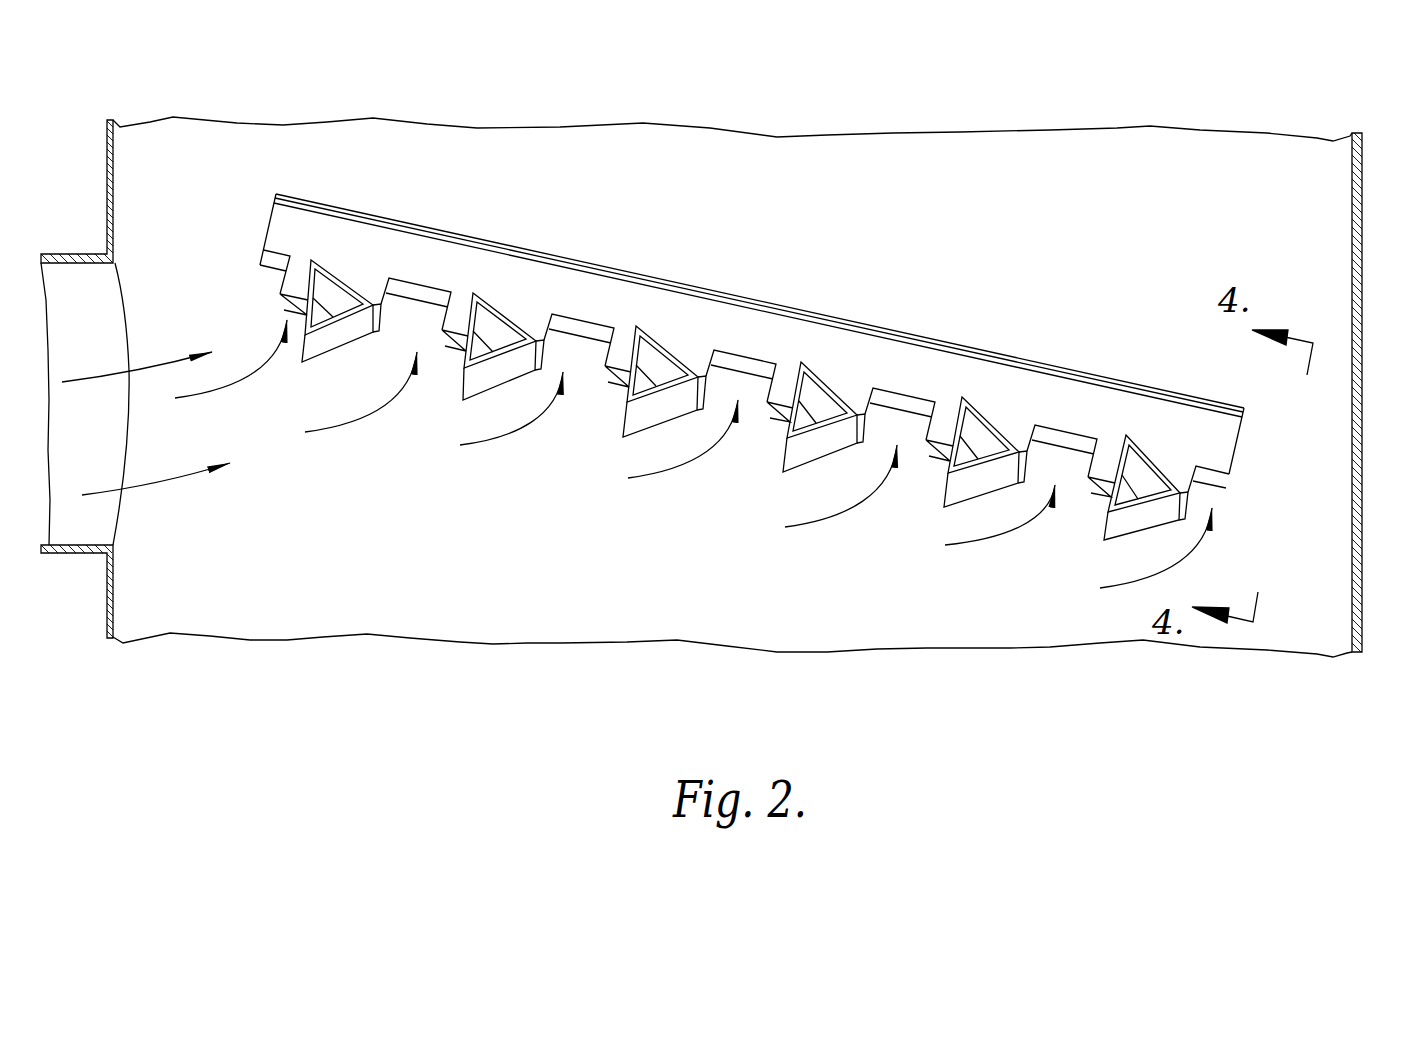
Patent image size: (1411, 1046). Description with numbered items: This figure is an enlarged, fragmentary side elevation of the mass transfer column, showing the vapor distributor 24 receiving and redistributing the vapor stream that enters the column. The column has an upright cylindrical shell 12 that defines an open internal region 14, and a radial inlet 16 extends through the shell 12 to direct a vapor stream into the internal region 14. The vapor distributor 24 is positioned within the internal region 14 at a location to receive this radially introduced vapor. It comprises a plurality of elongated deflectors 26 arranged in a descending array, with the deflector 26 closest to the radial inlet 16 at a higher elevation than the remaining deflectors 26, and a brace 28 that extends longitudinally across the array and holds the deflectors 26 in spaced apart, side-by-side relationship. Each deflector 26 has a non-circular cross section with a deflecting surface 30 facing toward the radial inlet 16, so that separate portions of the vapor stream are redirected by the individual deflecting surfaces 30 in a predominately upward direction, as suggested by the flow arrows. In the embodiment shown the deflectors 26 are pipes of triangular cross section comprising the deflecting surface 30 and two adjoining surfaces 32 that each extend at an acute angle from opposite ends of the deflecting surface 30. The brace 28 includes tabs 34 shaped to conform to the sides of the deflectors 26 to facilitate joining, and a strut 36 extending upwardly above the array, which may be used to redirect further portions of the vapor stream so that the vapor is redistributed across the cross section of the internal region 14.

The shell 12 is at (1355, 158).
The open internal region 14 is at (1270, 223).
The radial inlet 16 is at (73, 273).
The vapor distributor 24 is at (782, 318).
The deflector 26 is at (652, 355).
The brace 28 is at (1138, 382).
The deflecting surface 30 is at (622, 390).
The adjoining surface 32 is at (680, 360).
The tab 34 is at (705, 362).
The strut 36 is at (988, 352).